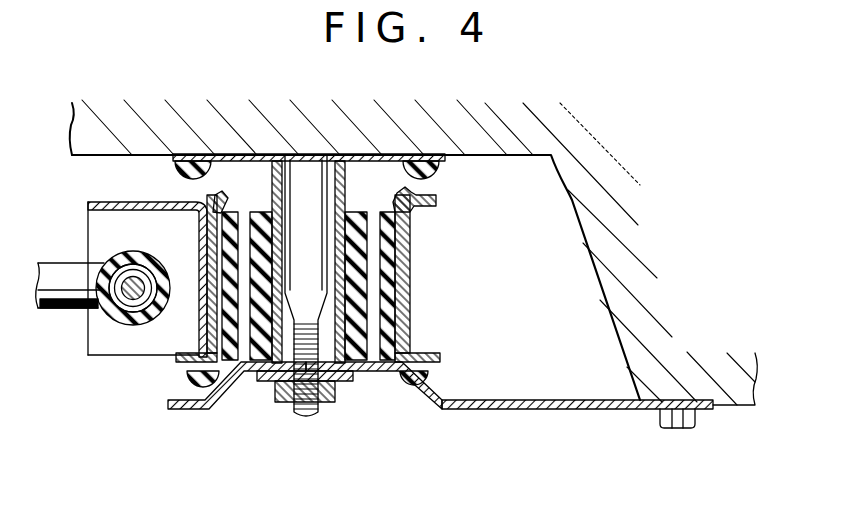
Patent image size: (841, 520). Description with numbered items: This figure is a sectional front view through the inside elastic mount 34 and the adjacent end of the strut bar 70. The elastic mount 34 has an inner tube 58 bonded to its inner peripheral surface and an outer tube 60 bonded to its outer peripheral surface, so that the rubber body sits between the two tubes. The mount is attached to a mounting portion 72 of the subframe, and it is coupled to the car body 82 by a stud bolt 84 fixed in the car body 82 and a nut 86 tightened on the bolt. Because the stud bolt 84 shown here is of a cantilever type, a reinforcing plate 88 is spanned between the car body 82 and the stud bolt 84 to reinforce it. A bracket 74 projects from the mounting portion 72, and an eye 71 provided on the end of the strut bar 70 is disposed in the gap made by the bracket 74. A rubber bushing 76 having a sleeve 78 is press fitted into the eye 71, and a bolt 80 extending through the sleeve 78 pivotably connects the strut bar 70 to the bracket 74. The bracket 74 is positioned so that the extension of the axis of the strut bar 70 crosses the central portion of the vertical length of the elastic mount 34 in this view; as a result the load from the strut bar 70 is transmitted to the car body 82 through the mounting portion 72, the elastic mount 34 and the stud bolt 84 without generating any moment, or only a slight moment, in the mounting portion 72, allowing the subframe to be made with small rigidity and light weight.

The elastic mount 34 is at (362, 322).
The inner tube 58 is at (355, 376).
The outer tube 60 is at (262, 366).
The strut bar 70 is at (67, 283).
The eye 71 is at (123, 271).
The mounting portion 72 is at (207, 310).
The bracket 74 is at (111, 352).
The rubber bushing 76 is at (86, 302).
The sleeve 78 is at (152, 271).
The bolt 80 is at (122, 327).
The car body 82 is at (433, 122).
The stud bolt 84 is at (325, 205).
The nut 86 is at (323, 403).
The reinforcing plate 88 is at (521, 410).